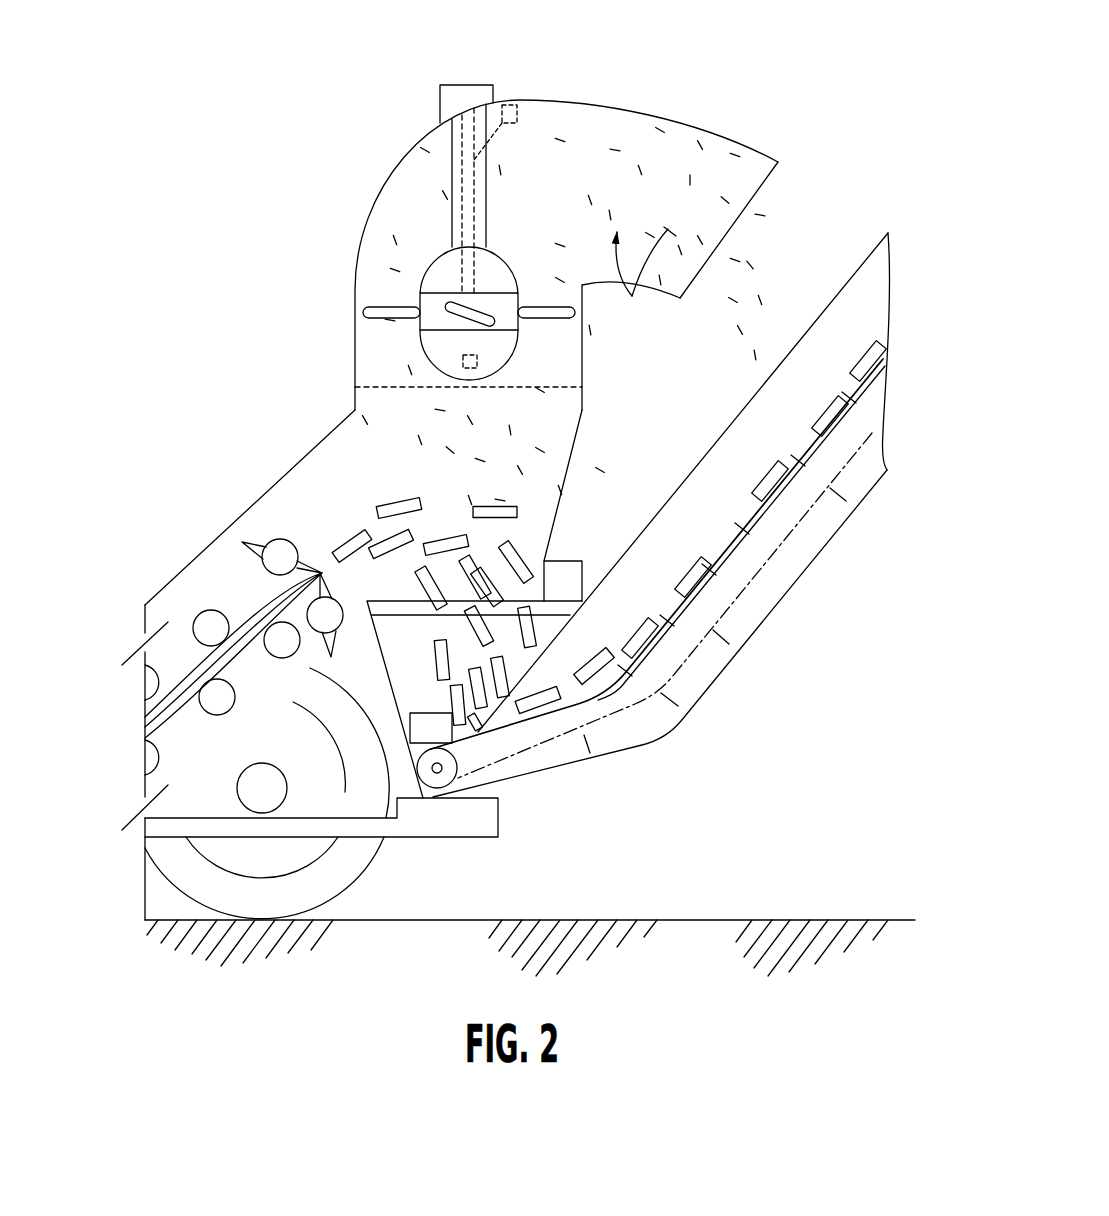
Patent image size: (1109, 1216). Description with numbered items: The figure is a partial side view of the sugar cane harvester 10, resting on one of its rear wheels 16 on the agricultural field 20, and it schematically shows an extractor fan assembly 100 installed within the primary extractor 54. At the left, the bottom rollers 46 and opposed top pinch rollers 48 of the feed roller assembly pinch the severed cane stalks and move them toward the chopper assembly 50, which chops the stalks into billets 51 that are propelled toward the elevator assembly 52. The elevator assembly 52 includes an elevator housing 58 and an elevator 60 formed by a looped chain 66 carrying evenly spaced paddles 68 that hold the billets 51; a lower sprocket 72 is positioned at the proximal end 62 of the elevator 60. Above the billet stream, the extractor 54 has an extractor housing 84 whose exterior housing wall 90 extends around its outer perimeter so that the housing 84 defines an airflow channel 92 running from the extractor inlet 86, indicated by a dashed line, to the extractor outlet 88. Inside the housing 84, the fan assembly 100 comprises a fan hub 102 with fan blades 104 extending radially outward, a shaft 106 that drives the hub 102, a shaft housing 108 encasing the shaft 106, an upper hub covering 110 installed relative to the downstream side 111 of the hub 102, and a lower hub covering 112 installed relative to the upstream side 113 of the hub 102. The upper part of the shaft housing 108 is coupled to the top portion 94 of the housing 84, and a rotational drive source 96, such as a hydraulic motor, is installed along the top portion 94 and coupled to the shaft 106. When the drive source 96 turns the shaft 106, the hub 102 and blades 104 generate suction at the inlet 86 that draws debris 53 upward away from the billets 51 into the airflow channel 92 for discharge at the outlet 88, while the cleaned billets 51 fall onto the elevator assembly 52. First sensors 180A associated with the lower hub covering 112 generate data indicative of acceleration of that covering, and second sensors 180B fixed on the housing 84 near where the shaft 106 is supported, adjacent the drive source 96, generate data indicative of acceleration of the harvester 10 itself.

The harvester 10 is at (104, 612).
The rear wheels 16 is at (307, 885).
The agricultural field 20 is at (692, 920).
The bottom rollers 46 is at (222, 708).
The top pinch rollers 48 is at (152, 683).
The chopper assembly 50 is at (277, 526).
The billets 51 is at (510, 553).
The elevator assembly 52 is at (679, 555).
The debris 53 is at (646, 277).
The primary extractor 54 is at (737, 62).
The elevator housing 58 is at (835, 527).
The elevator 60 is at (858, 415).
The proximal end 62 is at (519, 800).
The looped chain 66 is at (738, 621).
The paddles 68 is at (845, 396).
The lower sprocket 72 is at (437, 788).
The extractor housing 84 is at (533, 255).
The exterior housing wall 90 is at (399, 158).
The extractor inlet 86 is at (572, 388).
The extractor outlet 88 is at (766, 179).
The airflow channel 92 is at (560, 194).
The top portion 94 is at (531, 99).
The rotational drive source 96 is at (466, 94).
The extractor fan assembly 100 is at (397, 241).
The fan hub 102 is at (506, 300).
The fan blades 104 is at (380, 312).
The shaft 106 is at (517, 118).
The shaft housing 108 is at (489, 220).
The upper hub covering 110 is at (428, 262).
The downstream side 111 is at (404, 284).
The lower hub covering 112 is at (512, 356).
The upstream side 113 is at (407, 343).
The first sensors 180A is at (468, 369).
The second sensors 180B is at (509, 104).